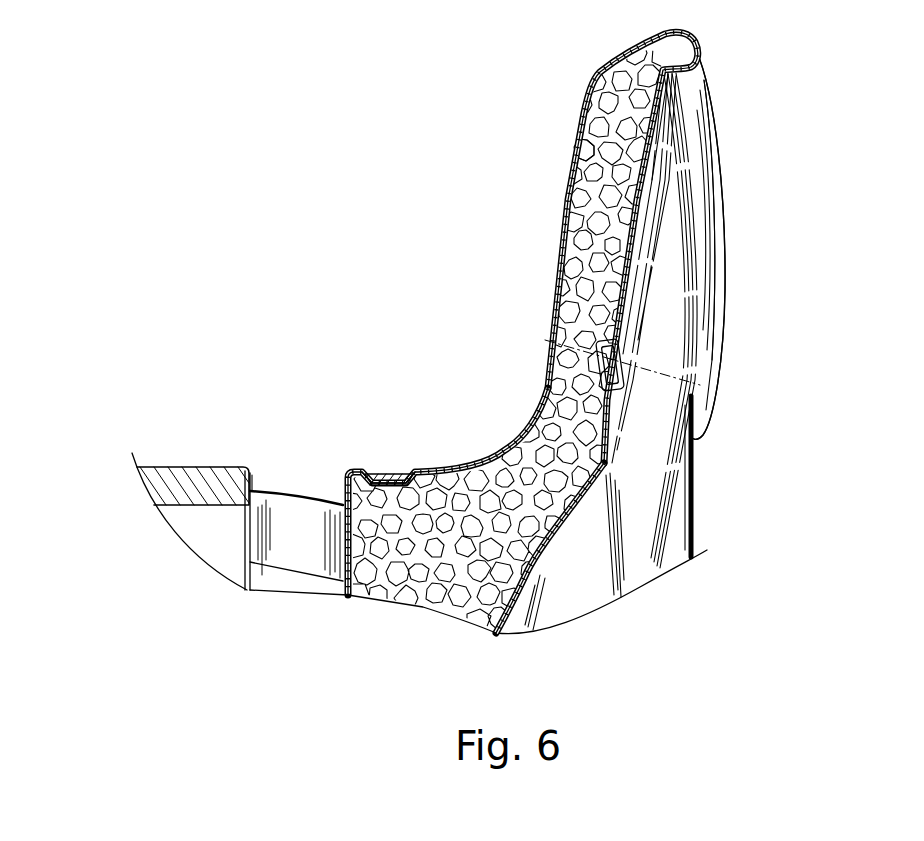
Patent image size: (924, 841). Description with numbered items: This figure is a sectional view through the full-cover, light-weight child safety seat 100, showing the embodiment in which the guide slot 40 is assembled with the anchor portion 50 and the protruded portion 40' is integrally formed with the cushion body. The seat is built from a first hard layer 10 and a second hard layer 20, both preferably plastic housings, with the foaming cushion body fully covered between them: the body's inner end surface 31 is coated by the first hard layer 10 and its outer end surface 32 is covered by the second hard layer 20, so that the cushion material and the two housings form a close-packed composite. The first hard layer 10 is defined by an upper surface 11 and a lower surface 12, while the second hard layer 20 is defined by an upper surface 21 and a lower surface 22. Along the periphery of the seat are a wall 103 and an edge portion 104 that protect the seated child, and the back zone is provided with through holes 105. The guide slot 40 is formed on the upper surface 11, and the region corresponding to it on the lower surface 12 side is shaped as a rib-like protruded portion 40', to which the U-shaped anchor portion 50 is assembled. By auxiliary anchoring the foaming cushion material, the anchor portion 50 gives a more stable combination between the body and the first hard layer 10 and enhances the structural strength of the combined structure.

The first hard layer 10 is at (583, 100).
The upper surface 11 is at (583, 100).
The lower surface 12 is at (598, 203).
The second hard layer 20 is at (655, 297).
The upper surface 21 is at (655, 297).
The lower surface 22 is at (613, 428).
The inner end surface 31 is at (505, 488).
The outer end surface 32 is at (615, 163).
The guide slot 40 is at (379, 435).
The protruded portion 40' is at (586, 513).
The anchor portion 50 is at (700, 385).
The child safety seat 100 is at (703, 583).
The wall 103 is at (668, 247).
The edge portion 104 is at (725, 182).
The through holes 105 is at (298, 533).